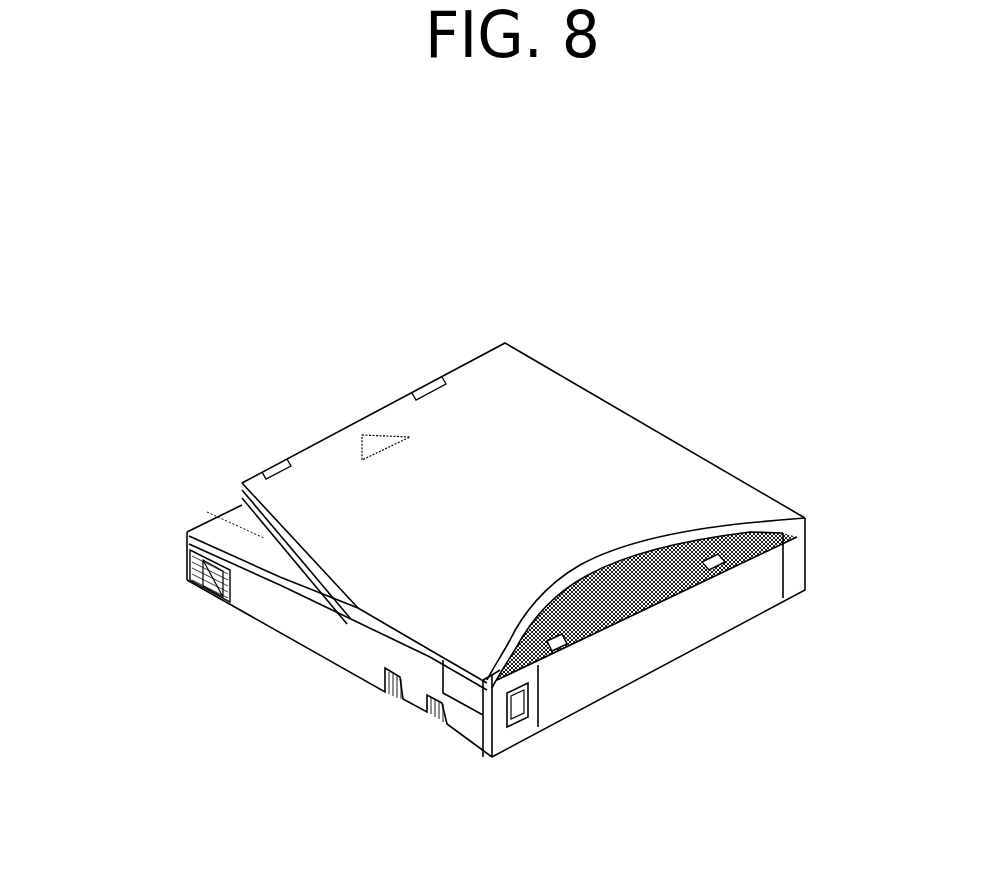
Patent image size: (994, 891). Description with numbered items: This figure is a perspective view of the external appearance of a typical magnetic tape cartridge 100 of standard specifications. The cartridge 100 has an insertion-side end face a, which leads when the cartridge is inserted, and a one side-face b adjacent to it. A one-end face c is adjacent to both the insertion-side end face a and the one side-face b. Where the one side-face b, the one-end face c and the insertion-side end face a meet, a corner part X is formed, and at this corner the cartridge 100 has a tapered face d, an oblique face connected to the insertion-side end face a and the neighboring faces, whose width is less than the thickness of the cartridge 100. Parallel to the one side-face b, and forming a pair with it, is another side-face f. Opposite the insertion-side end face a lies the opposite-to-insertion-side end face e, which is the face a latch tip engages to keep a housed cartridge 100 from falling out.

The magnetic tape cartridge 100 is at (467, 529).
The insertion-side end face a is at (320, 438).
The one side-face b is at (372, 648).
The one-end face c is at (540, 457).
The tapered face d is at (205, 521).
The opposite-to-insertion-side end face e is at (657, 637).
The another side-face f is at (653, 422).
The corner part x is at (140, 478).